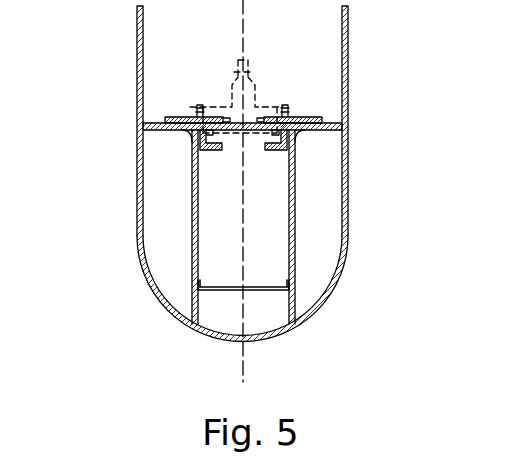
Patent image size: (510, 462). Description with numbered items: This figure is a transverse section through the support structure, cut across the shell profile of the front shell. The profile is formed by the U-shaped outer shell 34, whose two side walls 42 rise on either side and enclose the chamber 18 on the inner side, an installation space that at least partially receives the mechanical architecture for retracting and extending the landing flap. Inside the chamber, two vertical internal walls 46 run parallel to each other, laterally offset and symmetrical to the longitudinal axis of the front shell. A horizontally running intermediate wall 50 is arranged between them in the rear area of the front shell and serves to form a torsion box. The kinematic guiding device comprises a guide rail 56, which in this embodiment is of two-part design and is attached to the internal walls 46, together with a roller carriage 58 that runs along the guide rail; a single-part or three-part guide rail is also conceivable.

The chamber 18 is at (194, 50).
The U-shaped outer shell 34 is at (318, 312).
The side walls 42 is at (137, 183).
The vertical internal walls 46 is at (192, 231).
The intermediate wall 50 is at (268, 288).
The guide rail 56 is at (199, 116).
The roller carriage 58 is at (248, 114).